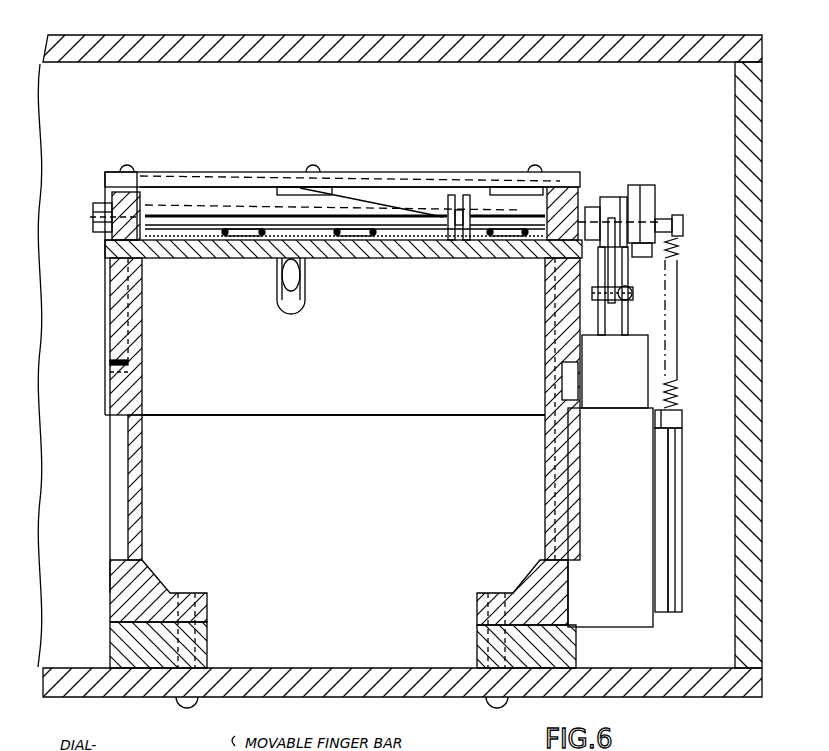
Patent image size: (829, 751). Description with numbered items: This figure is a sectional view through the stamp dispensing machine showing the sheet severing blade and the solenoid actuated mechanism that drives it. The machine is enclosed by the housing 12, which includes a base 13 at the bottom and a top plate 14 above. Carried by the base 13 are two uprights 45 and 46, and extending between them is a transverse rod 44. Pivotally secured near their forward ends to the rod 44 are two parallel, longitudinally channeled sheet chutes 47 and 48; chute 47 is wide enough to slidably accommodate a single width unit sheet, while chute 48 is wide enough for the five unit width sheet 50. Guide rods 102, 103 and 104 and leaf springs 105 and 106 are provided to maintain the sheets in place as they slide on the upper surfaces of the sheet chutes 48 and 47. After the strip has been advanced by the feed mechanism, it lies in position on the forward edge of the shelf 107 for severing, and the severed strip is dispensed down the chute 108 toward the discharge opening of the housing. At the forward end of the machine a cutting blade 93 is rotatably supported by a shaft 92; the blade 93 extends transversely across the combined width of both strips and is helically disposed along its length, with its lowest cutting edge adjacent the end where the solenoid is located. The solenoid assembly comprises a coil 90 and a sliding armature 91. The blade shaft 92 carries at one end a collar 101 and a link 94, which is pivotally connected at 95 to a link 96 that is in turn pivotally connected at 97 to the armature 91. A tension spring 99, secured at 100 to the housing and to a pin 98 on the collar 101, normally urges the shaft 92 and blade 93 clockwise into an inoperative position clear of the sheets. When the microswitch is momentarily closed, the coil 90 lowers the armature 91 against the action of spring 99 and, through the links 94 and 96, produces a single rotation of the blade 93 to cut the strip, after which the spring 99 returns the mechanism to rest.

The housing 12 is at (734, 436).
The base 13 is at (300, 690).
The top plate 14 is at (418, 36).
The transverse rod 44 is at (246, 228).
The upright 45 is at (140, 346).
The upright 46 is at (548, 343).
The sheet chute 47 is at (481, 208).
The sheet chute 48 is at (150, 208).
The five unit width sheet 50 is at (190, 232).
The coil 90 is at (645, 520).
The sliding armature 91 is at (642, 378).
The shaft 92 is at (590, 206).
The cutting blade 93 is at (363, 201).
The link 94 is at (612, 197).
The pivot 95 is at (614, 260).
The link 96 is at (622, 276).
The pivot 97 is at (618, 293).
The pin 98 is at (687, 221).
The tension spring 99 is at (678, 290).
The spring anchor 100 is at (683, 416).
The collar 101 is at (646, 187).
The guide rod 102 is at (243, 243).
The guide rod 103 is at (374, 236).
The guide rod 104 is at (524, 236).
The leaf spring 105 is at (300, 185).
The leaf spring 106 is at (508, 186).
The shelf 107 is at (438, 256).
The chute 108 is at (496, 416).